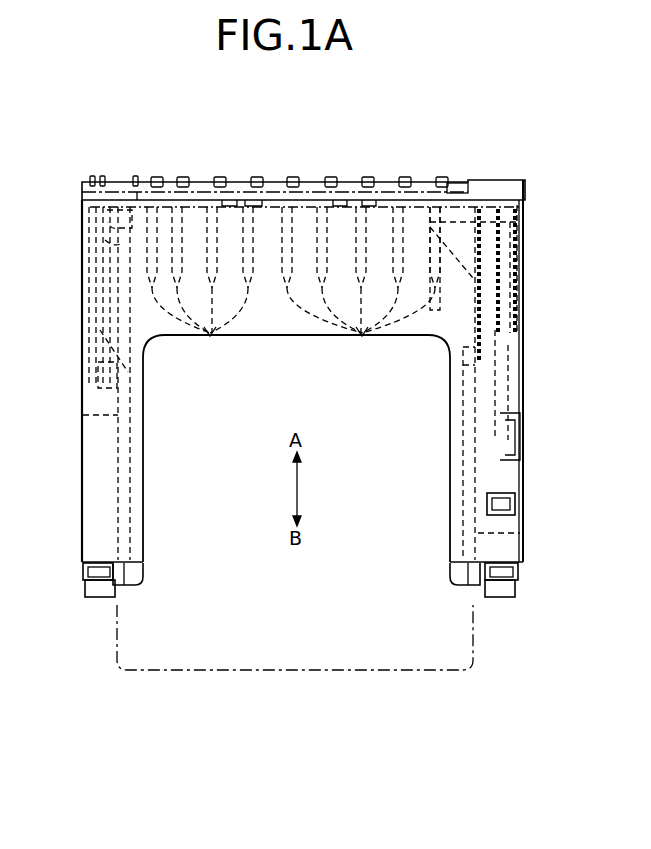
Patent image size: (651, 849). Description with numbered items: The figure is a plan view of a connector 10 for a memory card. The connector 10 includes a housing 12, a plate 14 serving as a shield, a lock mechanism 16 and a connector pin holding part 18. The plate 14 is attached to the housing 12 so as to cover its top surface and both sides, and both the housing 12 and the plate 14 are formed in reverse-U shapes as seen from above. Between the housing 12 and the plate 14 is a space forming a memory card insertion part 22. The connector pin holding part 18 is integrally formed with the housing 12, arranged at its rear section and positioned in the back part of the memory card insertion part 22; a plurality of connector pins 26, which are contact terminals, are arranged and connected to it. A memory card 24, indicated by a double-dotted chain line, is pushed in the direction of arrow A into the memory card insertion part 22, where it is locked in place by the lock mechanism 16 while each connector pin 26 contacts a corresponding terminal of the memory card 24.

The connector 10 is at (397, 136).
The housing 12 is at (508, 178).
The plate 14 is at (93, 484).
The lock mechanism 16 is at (455, 447).
The connector pin holding part 18 is at (315, 180).
The memory card insertion part 22 is at (291, 320).
The memory card 24 is at (473, 633).
The connector pins 26 is at (286, 351).